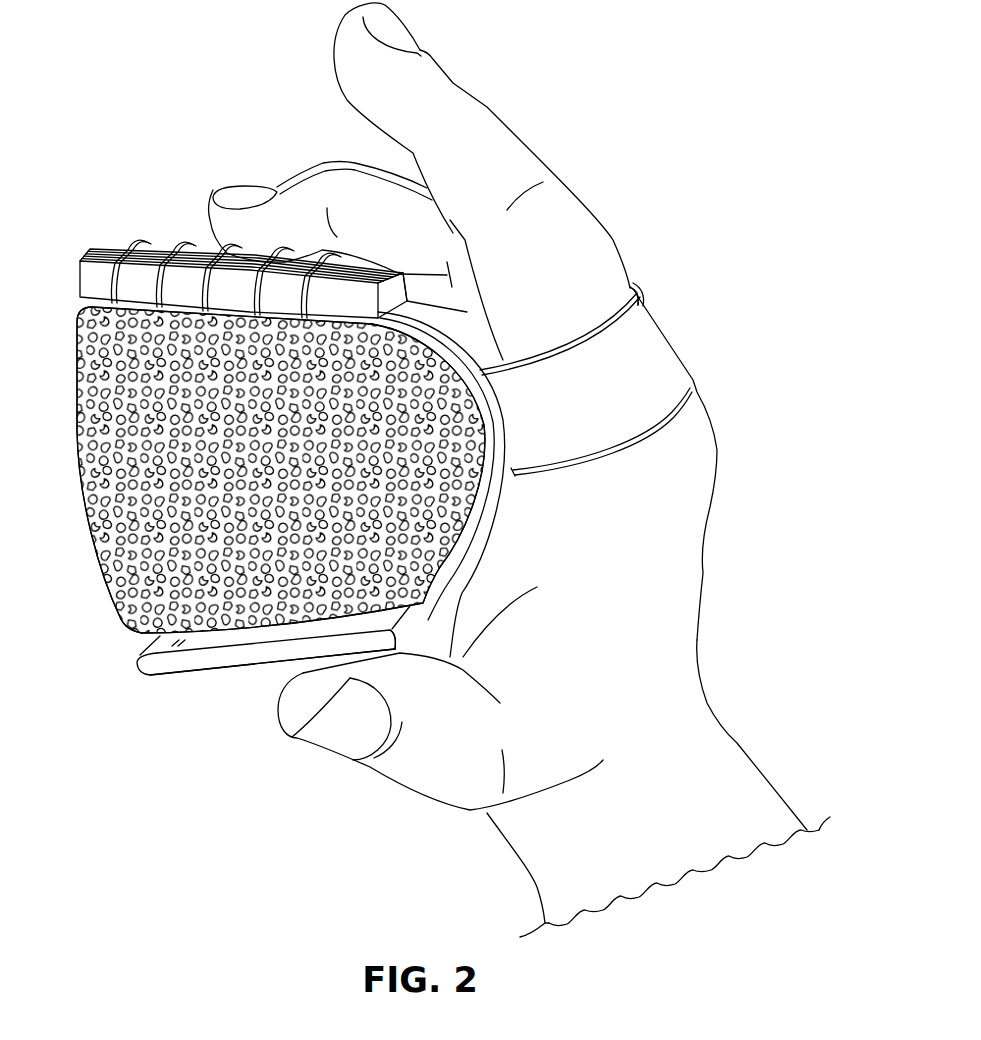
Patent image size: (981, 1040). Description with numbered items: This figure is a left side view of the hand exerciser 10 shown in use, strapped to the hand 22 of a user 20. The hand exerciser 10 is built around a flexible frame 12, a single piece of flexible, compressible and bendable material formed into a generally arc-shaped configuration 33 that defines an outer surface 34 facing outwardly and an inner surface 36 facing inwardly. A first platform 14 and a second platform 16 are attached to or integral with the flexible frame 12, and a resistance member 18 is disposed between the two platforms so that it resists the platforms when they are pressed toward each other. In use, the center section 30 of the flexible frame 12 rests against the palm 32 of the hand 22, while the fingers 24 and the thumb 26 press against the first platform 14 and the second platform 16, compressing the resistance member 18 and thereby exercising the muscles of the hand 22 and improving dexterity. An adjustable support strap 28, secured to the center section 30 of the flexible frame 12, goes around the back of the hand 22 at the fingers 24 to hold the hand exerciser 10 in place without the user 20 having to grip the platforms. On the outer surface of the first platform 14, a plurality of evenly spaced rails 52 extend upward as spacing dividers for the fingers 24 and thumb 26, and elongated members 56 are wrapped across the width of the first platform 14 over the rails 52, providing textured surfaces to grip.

The hand exerciser 10 is at (95, 156).
The flexible frame 12 is at (478, 405).
The first platform 14 is at (92, 280).
The second platform 16 is at (157, 667).
The resistance member 18 is at (110, 517).
The user 20 is at (748, 731).
The hand 22 is at (496, 446).
The fingers 24 is at (443, 92).
The thumb 26 is at (447, 780).
The adjustable support strap 28 is at (647, 353).
The center section 30 is at (497, 508).
The palm 32 is at (450, 598).
The arc-shaped configuration 33 is at (190, 686).
The outer surface 34 is at (413, 300).
The inner surface 36 is at (450, 352).
The rails 52 is at (163, 248).
The elongated members 56 is at (128, 246).